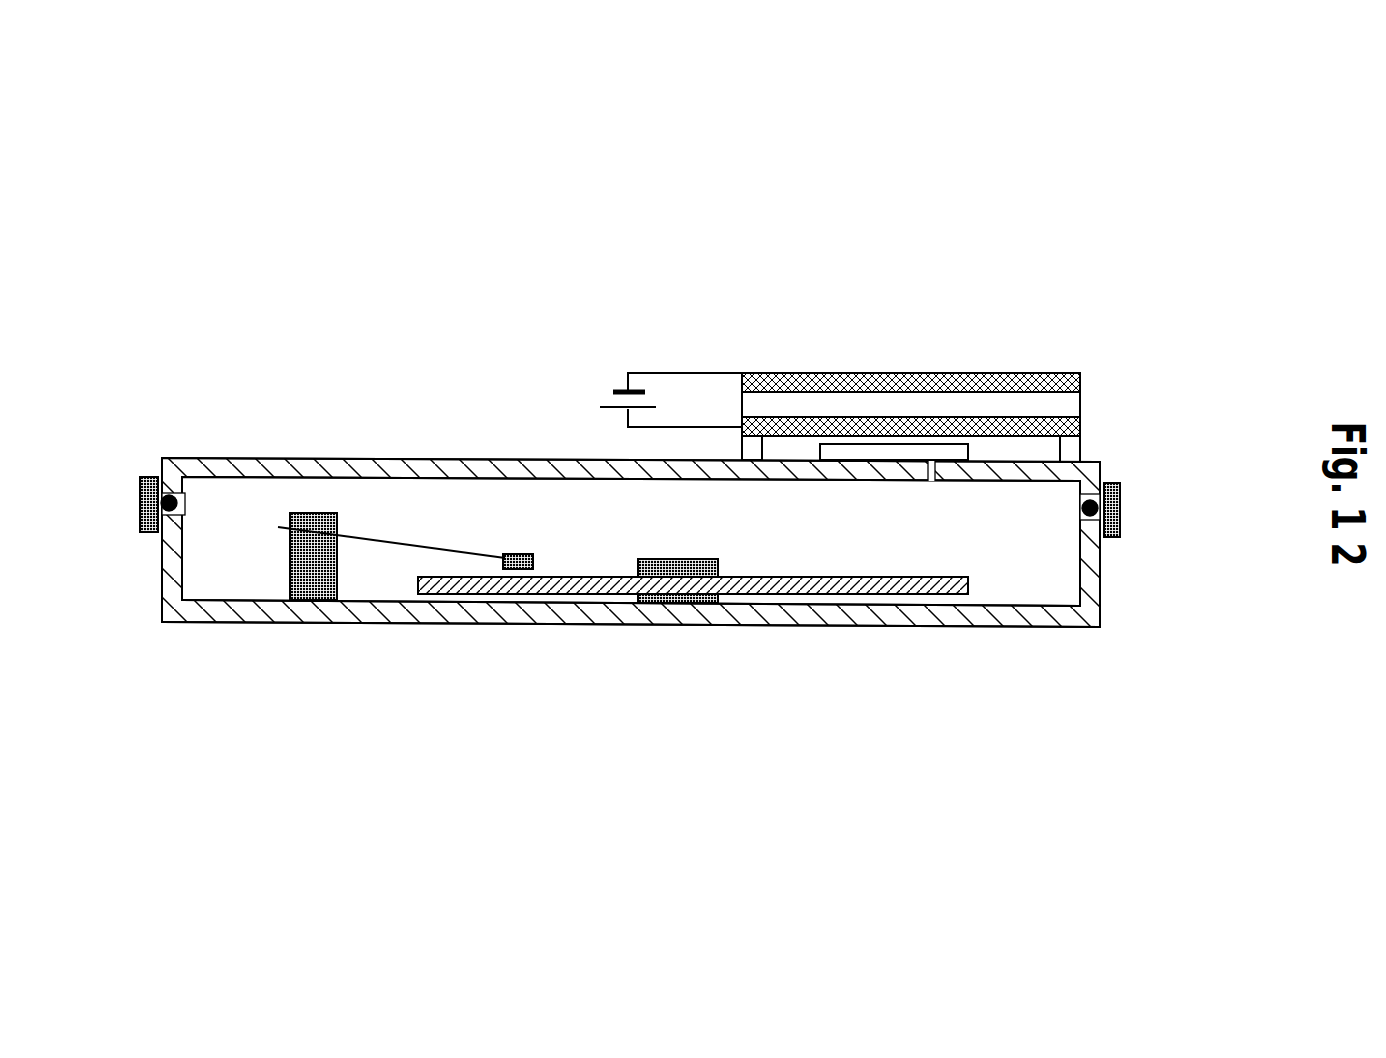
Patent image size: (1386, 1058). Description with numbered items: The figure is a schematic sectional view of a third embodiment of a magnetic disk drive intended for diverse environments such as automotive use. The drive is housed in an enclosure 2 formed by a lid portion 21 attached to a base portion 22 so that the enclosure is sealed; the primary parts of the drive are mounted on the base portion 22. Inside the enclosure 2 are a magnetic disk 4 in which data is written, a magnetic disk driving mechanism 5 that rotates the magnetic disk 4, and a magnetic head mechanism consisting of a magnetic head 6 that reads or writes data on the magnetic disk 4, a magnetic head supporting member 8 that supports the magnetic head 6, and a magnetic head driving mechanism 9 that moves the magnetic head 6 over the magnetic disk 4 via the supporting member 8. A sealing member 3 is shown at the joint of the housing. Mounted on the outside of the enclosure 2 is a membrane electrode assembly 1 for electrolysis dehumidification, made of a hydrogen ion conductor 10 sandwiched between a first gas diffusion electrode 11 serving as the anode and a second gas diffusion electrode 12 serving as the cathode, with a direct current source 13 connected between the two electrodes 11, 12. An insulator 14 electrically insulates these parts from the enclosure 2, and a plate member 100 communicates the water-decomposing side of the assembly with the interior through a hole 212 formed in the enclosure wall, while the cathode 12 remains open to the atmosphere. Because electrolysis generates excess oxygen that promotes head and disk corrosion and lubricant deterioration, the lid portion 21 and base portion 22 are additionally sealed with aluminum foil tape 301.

The membrane electrode assembly 1 is at (936, 405).
The enclosure 2 is at (631, 539).
The sealing member 3 is at (185, 503).
The magnetic disk 4 is at (793, 577).
The magnetic disk driving mechanism 5 is at (680, 559).
The magnetic head 6 is at (533, 560).
The magnetic head supporting member 8 is at (470, 552).
The magnetic head driving mechanism 9 is at (290, 557).
The hydrogen ion conductor 10 is at (955, 368).
The first gas diffusion electrode (anode) 11 is at (1082, 425).
The second gas diffusion electrode (cathode) 12 is at (1037, 375).
The direct current source 13 is at (608, 405).
The insulator 14 is at (745, 448).
The lid portion 21 is at (369, 460).
The base portion 22 is at (232, 622).
The diaphragm plate 100 is at (838, 444).
The hole 212 is at (936, 481).
The aluminum foil tape 301 is at (138, 507).